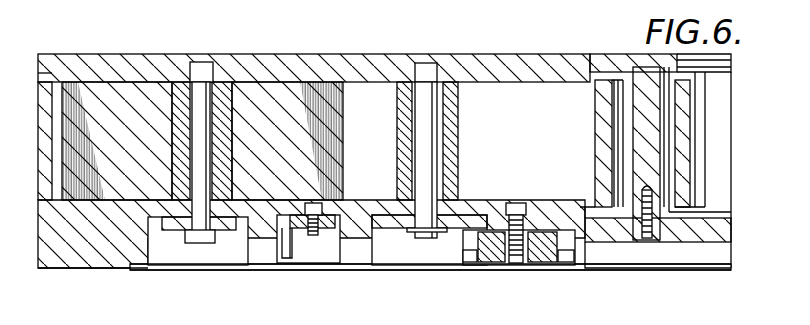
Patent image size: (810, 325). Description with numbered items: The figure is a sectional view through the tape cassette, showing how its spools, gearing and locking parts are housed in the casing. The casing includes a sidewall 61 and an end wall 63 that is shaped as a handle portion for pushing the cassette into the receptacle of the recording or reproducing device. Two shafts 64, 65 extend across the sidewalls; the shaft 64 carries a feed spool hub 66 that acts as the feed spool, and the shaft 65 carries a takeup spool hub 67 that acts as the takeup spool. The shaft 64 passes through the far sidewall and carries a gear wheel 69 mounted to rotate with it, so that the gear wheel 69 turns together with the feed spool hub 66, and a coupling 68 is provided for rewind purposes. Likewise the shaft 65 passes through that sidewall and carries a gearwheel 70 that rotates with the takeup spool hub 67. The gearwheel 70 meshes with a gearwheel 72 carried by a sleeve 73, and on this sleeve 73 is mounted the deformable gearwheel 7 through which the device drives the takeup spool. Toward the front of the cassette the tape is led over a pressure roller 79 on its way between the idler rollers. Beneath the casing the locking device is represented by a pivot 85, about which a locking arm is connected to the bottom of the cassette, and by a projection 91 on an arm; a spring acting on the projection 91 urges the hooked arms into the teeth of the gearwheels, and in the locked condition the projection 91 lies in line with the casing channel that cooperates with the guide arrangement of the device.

The deformable gearwheel 7 is at (508, 268).
The sidewall 61 is at (555, 68).
The end wall 63 is at (48, 72).
The shaft 64 is at (200, 62).
The shaft 65 is at (428, 66).
The feed spool hub 66 is at (222, 92).
The takeup spool hub 67 is at (448, 90).
The coupling 68 is at (200, 244).
The gear wheel 69 is at (172, 231).
The gearwheel 70 is at (408, 233).
The gearwheel 72 is at (556, 262).
The sleeve 73 is at (520, 262).
The pressure roller 79 is at (690, 138).
The pivot 85 is at (310, 237).
The projection 91 is at (285, 254).